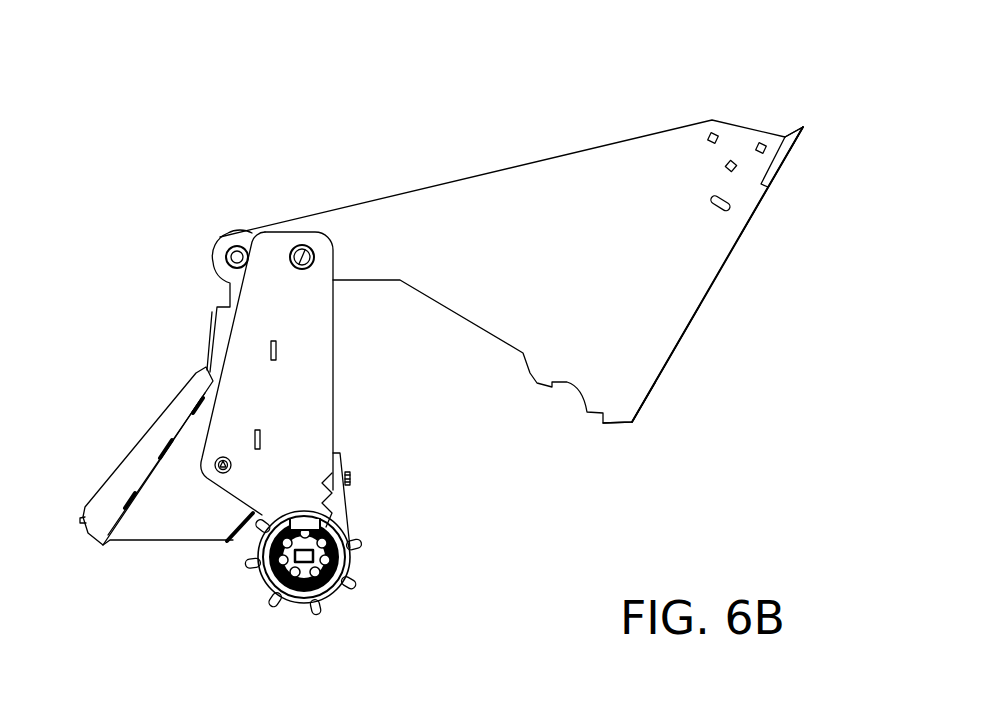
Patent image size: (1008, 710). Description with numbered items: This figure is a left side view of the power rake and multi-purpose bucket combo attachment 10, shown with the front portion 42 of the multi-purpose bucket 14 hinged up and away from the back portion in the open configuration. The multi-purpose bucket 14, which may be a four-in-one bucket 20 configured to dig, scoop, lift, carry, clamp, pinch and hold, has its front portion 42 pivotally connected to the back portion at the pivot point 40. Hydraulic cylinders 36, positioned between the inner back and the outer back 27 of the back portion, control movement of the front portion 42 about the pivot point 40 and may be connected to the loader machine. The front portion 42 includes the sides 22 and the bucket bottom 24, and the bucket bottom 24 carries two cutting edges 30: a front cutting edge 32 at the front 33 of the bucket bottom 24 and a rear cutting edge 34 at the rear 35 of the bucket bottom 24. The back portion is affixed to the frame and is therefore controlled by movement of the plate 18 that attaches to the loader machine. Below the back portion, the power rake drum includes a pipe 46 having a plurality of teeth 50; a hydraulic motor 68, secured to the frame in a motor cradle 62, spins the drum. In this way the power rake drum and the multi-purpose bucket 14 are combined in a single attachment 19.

The power rake and multi-purpose bucket combo attachment 10 is at (257, 122).
The multi-purpose bucket 14 is at (851, 91).
The plate 18 is at (104, 434).
The single attachment 19 is at (414, 150).
The 4-N-1 bucket 20 is at (836, 94).
The sides 22 is at (548, 254).
The bucket bottom 24 is at (717, 279).
The outer back 27 is at (268, 410).
The cutting edges 30 is at (761, 313).
The front cutting edge 32 is at (626, 430).
The front 33 is at (764, 96).
The rear cutting edge 34 is at (810, 130).
The rear 35 is at (688, 413).
The hydraulic cylinders 36 is at (222, 325).
The pivot point 40 is at (304, 246).
The front portion 42 is at (541, 128).
The pipe 46 is at (267, 587).
The teeth 50 is at (247, 566).
The motor cradle 62 is at (343, 504).
The hydraulic motor 68 is at (312, 561).